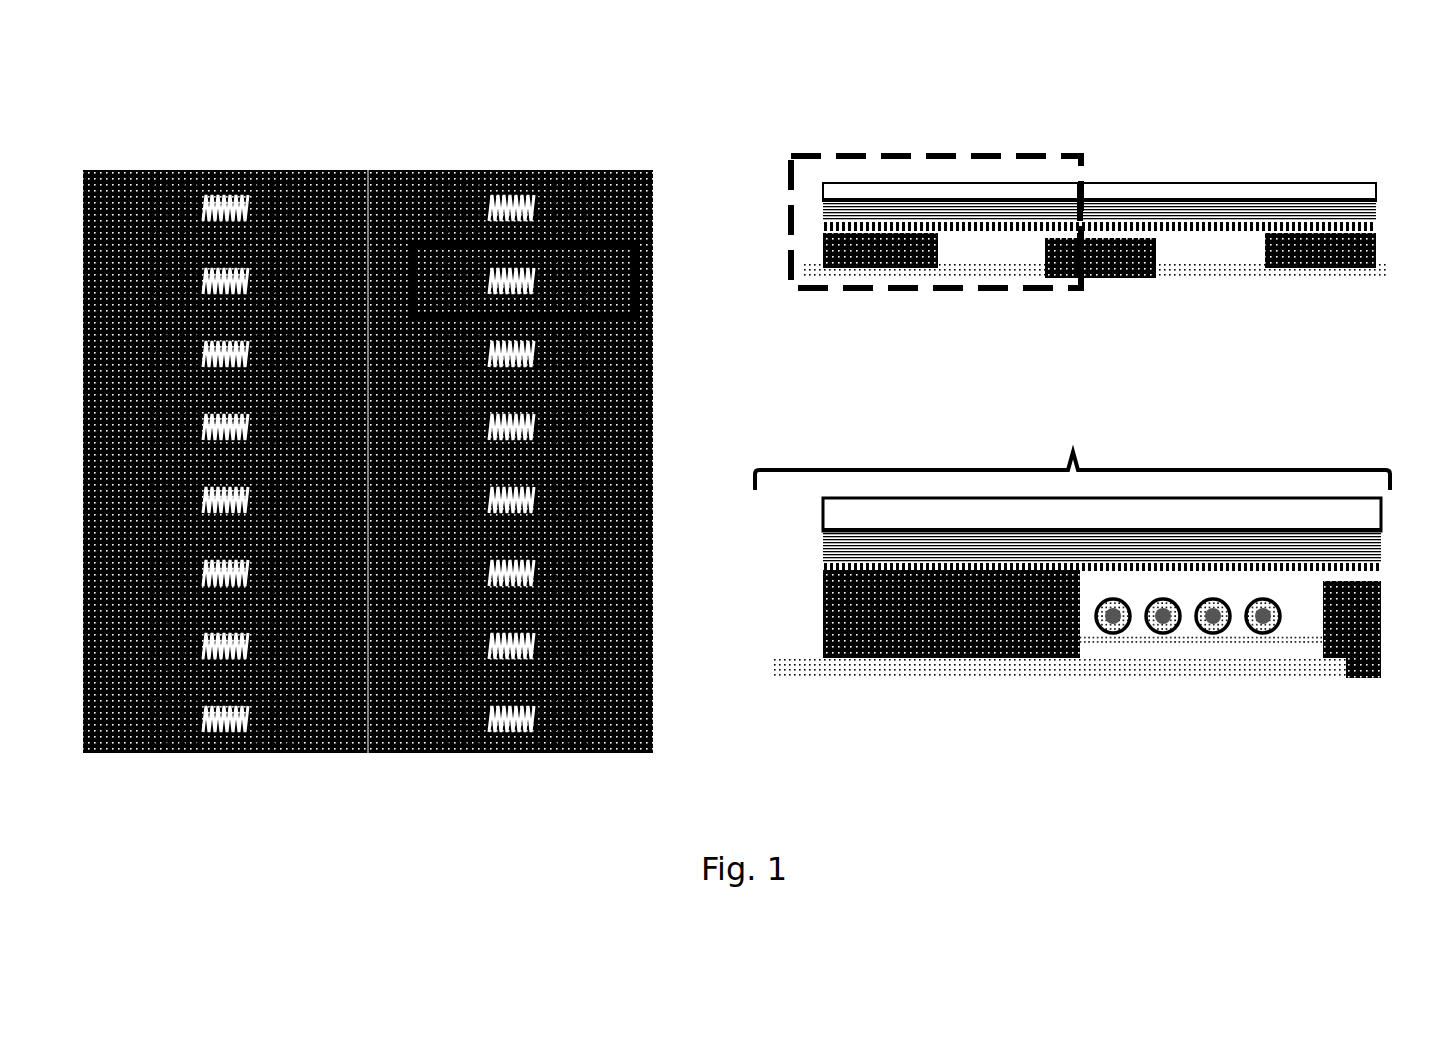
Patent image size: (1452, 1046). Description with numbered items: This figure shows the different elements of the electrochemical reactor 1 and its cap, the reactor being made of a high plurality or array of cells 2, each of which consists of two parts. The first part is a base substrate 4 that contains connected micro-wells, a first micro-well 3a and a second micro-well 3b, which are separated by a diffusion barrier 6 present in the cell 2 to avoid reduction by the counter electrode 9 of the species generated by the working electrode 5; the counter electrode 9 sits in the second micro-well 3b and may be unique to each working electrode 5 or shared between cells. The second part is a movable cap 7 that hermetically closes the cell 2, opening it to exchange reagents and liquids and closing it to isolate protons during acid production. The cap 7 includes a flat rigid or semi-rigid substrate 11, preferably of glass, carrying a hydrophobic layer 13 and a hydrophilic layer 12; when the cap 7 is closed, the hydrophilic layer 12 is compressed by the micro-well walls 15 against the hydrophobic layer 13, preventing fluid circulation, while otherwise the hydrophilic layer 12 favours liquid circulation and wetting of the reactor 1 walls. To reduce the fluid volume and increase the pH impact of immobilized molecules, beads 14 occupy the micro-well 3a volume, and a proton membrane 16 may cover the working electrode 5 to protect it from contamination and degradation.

The electrochemical reactor 1 is at (420, 133).
The cell 2 is at (770, 146).
The first micro-well 3a is at (960, 247).
The second micro-well 3b is at (1172, 243).
The base substrate 4 is at (1373, 230).
The working electrode 5 is at (1003, 260).
The diffusion barrier 6 is at (1118, 230).
The cap 7 is at (1373, 165).
The counter electrode 9 is at (1240, 267).
The substrate 11 is at (815, 508).
The hydrophilic layer 12 is at (815, 558).
The hydrophobic layer 13 is at (815, 537).
The beads 14 is at (1105, 608).
The walls 15 is at (855, 262).
The proton membrane 16 is at (1295, 632).